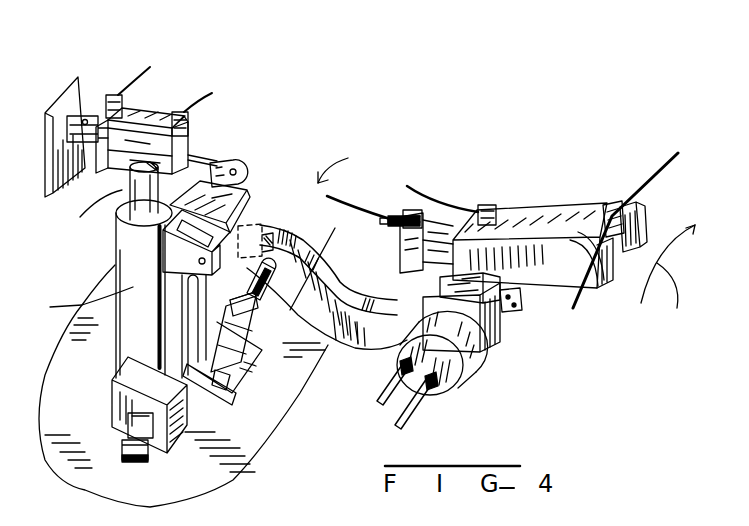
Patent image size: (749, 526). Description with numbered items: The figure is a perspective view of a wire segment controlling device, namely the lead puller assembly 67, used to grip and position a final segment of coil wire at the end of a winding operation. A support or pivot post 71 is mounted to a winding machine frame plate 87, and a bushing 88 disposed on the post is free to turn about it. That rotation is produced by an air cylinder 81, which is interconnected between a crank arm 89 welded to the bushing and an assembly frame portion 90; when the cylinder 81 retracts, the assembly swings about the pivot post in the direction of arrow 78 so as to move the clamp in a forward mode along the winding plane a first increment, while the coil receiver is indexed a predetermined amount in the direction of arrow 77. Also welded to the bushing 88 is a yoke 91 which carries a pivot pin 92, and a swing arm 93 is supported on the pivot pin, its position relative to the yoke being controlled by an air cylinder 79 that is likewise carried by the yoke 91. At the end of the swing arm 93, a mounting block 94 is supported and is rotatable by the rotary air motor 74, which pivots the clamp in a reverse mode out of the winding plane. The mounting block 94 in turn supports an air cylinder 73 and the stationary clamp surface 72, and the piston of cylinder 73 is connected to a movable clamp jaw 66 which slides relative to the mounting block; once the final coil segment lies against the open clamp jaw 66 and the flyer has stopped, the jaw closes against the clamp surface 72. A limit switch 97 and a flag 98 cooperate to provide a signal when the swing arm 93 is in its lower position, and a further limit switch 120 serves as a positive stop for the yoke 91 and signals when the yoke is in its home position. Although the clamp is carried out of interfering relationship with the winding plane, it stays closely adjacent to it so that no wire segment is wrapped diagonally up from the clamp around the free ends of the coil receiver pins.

The movable clamp jaw 66 is at (637, 220).
The lead puller assembly 67 is at (398, 176).
The support or pivot post 71 is at (653, 178).
The stationary clamp surface 72 is at (613, 207).
The air cylinder 73 is at (458, 217).
The rotary air motor 74 is at (452, 376).
The arrow 77 is at (379, 266).
The arrow 78 is at (335, 218).
The air cylinder 79 is at (267, 345).
The air cylinder 81 is at (148, 123).
The winding machine frame plate 87 is at (207, 457).
The bushing 88 is at (75, 306).
The crank arm 89 is at (238, 185).
The assembly frame portion 90 is at (85, 120).
The yoke 91 is at (173, 325).
The pivot pin 92 is at (197, 262).
The swing arm 93 is at (393, 337).
The mounting block 94 is at (508, 316).
The limit switch 97 is at (247, 268).
The flag 98 is at (272, 230).
The limit switch 120 is at (167, 372).